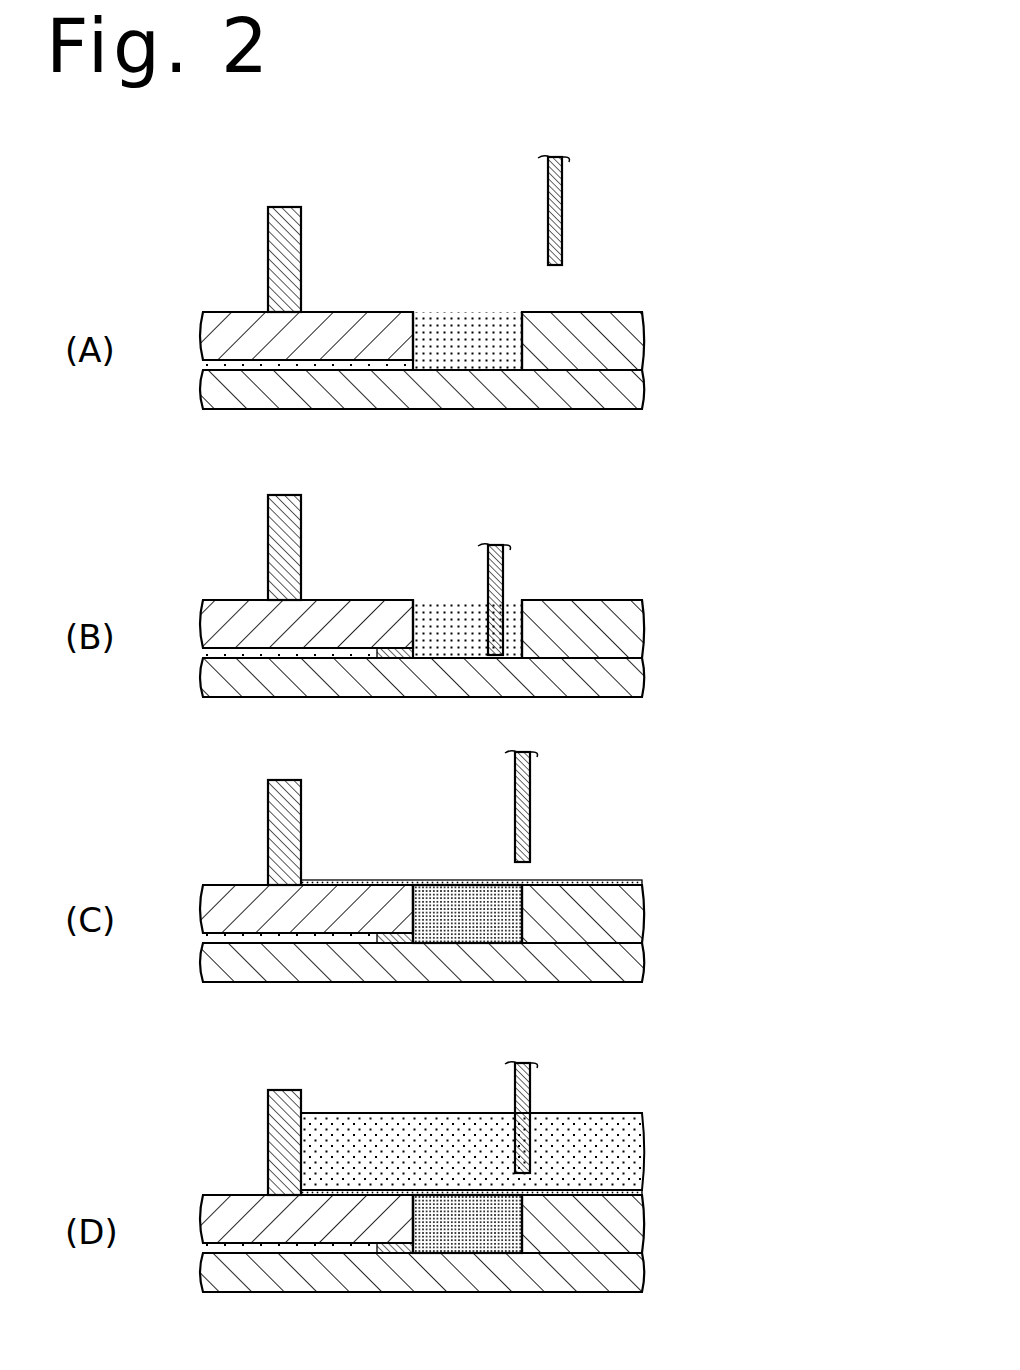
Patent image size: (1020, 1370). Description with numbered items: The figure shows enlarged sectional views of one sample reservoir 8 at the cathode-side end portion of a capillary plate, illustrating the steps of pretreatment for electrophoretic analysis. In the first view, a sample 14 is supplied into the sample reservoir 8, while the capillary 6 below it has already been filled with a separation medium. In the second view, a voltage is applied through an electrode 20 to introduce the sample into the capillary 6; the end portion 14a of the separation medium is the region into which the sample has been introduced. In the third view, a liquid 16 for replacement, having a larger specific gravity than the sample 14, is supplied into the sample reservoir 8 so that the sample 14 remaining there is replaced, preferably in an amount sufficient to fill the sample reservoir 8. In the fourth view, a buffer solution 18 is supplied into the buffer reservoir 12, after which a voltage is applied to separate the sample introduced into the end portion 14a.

The capillary 6 is at (400, 367).
The sample reservoir 8 is at (512, 345).
The buffer reservoir 12 is at (602, 277).
The sample 14 is at (468, 340).
The end portion of the separation medium 14a is at (386, 647).
The liquid for replacement 16 is at (467, 905).
The buffer solution 18 is at (620, 1140).
The electrode 20 is at (565, 192).